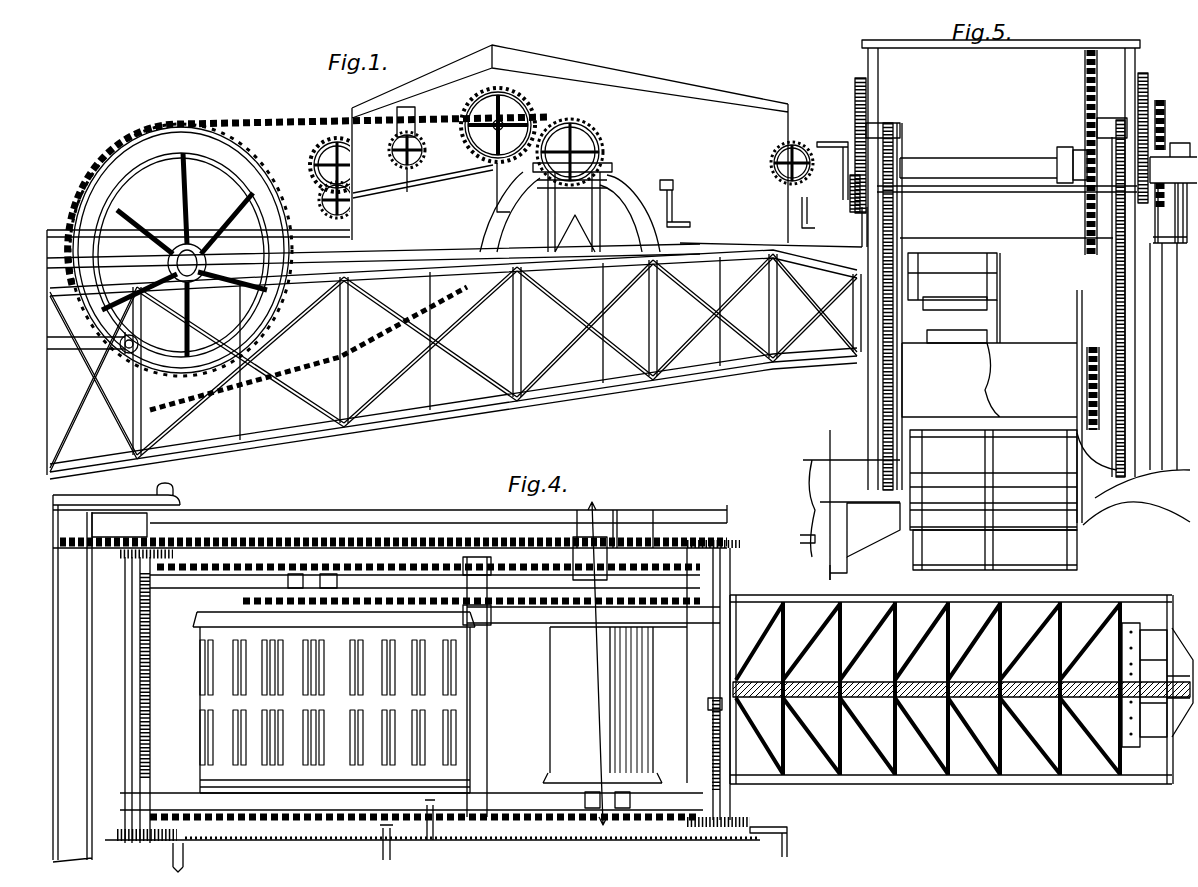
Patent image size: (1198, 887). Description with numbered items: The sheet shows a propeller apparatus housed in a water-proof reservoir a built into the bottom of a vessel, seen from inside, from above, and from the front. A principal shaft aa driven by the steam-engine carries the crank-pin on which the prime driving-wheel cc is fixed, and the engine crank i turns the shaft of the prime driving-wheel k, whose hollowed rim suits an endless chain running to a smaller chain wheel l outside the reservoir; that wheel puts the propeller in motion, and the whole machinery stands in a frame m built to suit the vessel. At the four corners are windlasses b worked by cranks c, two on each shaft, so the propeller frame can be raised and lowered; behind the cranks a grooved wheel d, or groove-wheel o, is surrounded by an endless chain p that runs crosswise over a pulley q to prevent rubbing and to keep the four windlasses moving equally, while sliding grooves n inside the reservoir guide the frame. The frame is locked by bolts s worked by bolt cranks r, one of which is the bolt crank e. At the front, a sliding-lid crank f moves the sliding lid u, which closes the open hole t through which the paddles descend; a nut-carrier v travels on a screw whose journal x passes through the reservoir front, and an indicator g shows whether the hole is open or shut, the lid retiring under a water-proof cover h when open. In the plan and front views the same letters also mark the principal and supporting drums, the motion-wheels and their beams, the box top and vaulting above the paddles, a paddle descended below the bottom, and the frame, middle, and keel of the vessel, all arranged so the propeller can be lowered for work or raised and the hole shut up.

In FIG. 1, the reservoir a is at (454, 262).
In FIG. 5, the reservoir a is at (1001, 265).
In FIG. 4, the reservoir a is at (390, 654).
In FIG. 4, the principal shaft aa is at (72, 678).
In FIG. 5, the windlasses b is at (1001, 261).
In FIG. 1, the cranks c is at (562, 158).
In FIG. 5, the cranks c is at (1004, 305).
In FIG. 4, the cranks c is at (335, 710).
In FIG. 4, the prime driving-wheel cc is at (393, 552).
In FIG. 5, the grooved wheel d is at (1006, 304).
In FIG. 4, the grooved wheel d is at (615, 665).
In FIG. 1, the bolt crank e is at (613, 173).
In FIG. 5, the bolt crank e is at (857, 227).
In FIG. 4, the bolt crank e is at (411, 691).
In FIG. 5, the sliding-lid crank f is at (1007, 306).
In FIG. 4, the sliding-lid crank f is at (466, 711).
In FIG. 5, the indicator g is at (848, 199).
In FIG. 1, the water-proof cover h is at (283, 352).
In FIG. 5, the water-proof cover h is at (1007, 175).
In FIG. 1, the engine crank i is at (106, 346).
In FIG. 5, the engine crank i is at (1072, 165).
In FIG. 4, the engine crank i is at (590, 663).
In FIG. 1, the prime driving-wheel k is at (350, 233).
In FIG. 4, the prime driving-wheel k is at (593, 570).
In FIG. 5, the smaller chain wheel l is at (1160, 144).
In FIG. 4, the smaller chain wheel l is at (342, 687).
In FIG. 1, the frame m is at (570, 207).
In FIG. 5, the frame m is at (1093, 148).
In FIG. 4, the frame m is at (430, 690).
In FIG. 5, the sliding grooves n is at (1092, 381).
In FIG. 4, the sliding grooves n is at (427, 695).
In FIG. 5, the groove-wheel o is at (992, 406).
In FIG. 4, the groove-wheel o is at (452, 842).
In FIG. 5, the endless chain p is at (1006, 317).
In FIG. 4, the endless chain p is at (432, 854).
In FIG. 5, the pulley q is at (954, 298).
In FIG. 4, the pulley q is at (440, 827).
In FIG. 5, the bolt cranks r is at (993, 480).
In FIG. 4, the bolt cranks r is at (390, 842).
In FIG. 5, the bolts s is at (995, 550).
In FIG. 5, the open hole t is at (1018, 513).
In FIG. 4, the open hole t is at (552, 700).
In FIG. 5, the sliding lid u is at (850, 505).
In FIG. 4, the sliding lid u is at (924, 664).
In FIG. 5, the nut-carrier v is at (838, 568).
In FIG. 4, the journal x is at (715, 710).